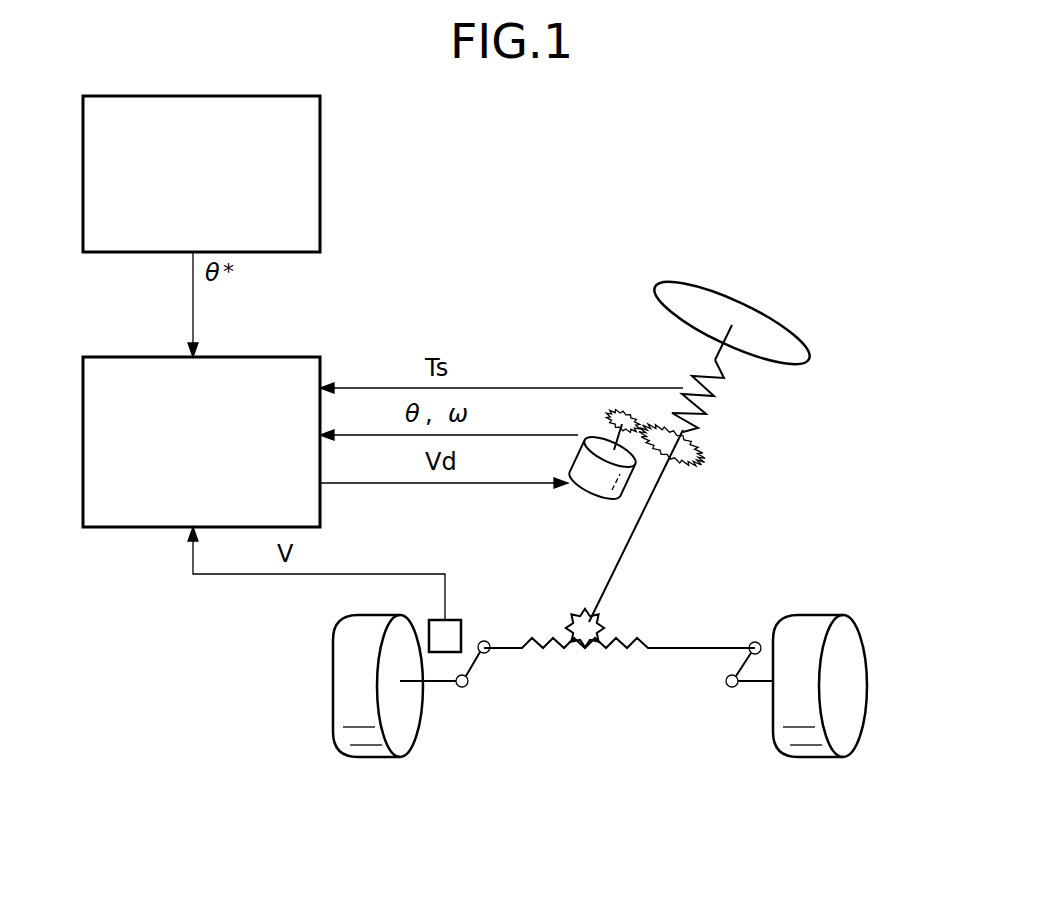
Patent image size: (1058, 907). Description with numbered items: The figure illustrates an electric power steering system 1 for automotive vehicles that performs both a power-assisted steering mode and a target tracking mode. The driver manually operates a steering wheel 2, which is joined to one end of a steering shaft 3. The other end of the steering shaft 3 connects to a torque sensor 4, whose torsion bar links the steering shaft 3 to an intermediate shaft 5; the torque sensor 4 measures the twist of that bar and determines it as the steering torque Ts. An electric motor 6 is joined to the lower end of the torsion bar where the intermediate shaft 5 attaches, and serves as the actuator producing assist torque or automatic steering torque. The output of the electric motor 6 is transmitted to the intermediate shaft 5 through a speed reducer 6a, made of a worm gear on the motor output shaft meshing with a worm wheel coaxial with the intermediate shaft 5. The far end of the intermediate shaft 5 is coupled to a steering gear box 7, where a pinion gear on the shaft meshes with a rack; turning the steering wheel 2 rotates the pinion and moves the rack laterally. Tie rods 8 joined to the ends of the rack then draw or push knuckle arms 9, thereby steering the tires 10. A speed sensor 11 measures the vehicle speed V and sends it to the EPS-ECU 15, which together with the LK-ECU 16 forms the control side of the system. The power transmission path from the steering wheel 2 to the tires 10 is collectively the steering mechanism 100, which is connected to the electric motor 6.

The electric power steering system 1 is at (750, 203).
The steering wheel 2 is at (787, 322).
The steering shaft 3 is at (720, 347).
The torque sensor 4 is at (713, 388).
The intermediate shaft 5 is at (647, 502).
The electric motor 6 is at (583, 493).
The speed reducer 6a is at (710, 446).
The steering gear box 7 is at (618, 622).
The tie rods 8 is at (508, 650).
The knuckle arms 9 is at (456, 686).
The tires 10 is at (333, 682).
The speed sensor 11 is at (455, 620).
The EPS-ECU 15 is at (277, 357).
The LK-ECU 16 is at (320, 123).
The steering mechanism 100 is at (607, 337).